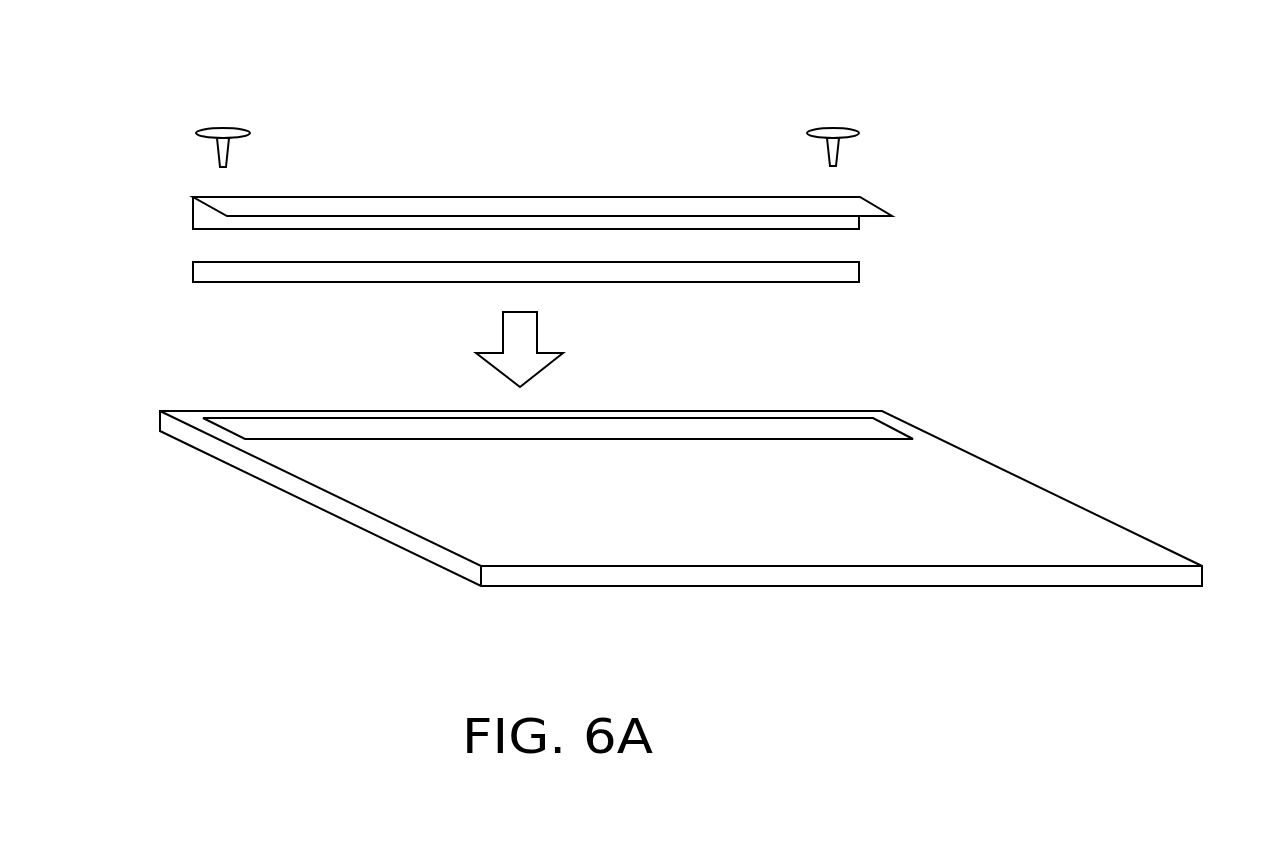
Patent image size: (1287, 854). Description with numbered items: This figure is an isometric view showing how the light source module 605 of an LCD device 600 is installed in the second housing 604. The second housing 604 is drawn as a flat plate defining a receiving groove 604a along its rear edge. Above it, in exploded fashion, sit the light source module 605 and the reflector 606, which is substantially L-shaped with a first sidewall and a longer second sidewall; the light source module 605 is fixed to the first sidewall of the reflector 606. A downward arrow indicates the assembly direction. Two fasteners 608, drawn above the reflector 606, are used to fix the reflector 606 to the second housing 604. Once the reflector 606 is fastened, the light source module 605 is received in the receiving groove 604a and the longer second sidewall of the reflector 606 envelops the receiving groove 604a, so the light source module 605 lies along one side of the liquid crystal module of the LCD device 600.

The LCD device 600 is at (1155, 530).
The second housing 604 is at (965, 458).
The receiving groove 604a is at (276, 432).
The light source module 605 is at (825, 272).
The reflector 606 is at (602, 203).
The fasteners 608 is at (860, 134).